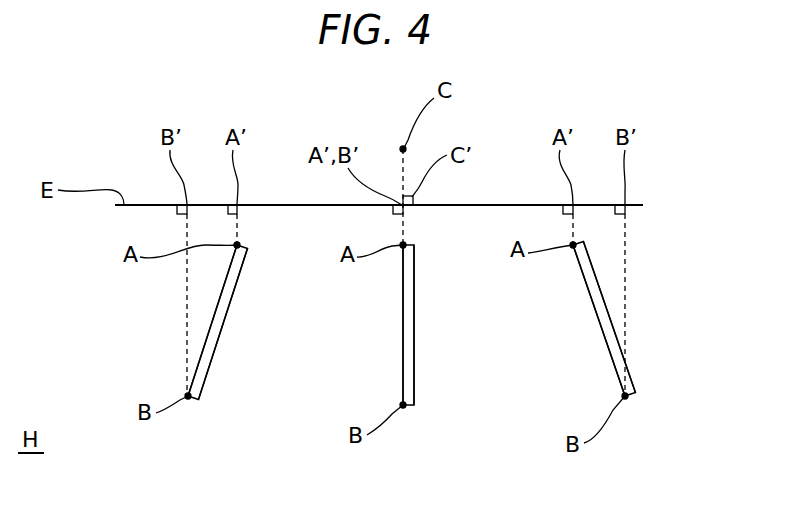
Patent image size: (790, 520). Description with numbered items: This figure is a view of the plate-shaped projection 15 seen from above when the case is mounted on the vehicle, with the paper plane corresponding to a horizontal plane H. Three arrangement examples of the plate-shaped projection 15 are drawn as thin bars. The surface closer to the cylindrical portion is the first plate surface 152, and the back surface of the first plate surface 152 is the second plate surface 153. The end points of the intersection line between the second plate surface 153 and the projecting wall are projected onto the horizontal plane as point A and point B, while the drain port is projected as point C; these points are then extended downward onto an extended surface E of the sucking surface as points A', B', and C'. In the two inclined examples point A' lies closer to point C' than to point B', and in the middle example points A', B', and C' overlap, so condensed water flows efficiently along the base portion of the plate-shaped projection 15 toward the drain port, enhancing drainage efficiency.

The plate-shaped projection 15 is at (192, 401).
The first plate surface 152 is at (218, 335).
The second plate surface 153 is at (215, 308).